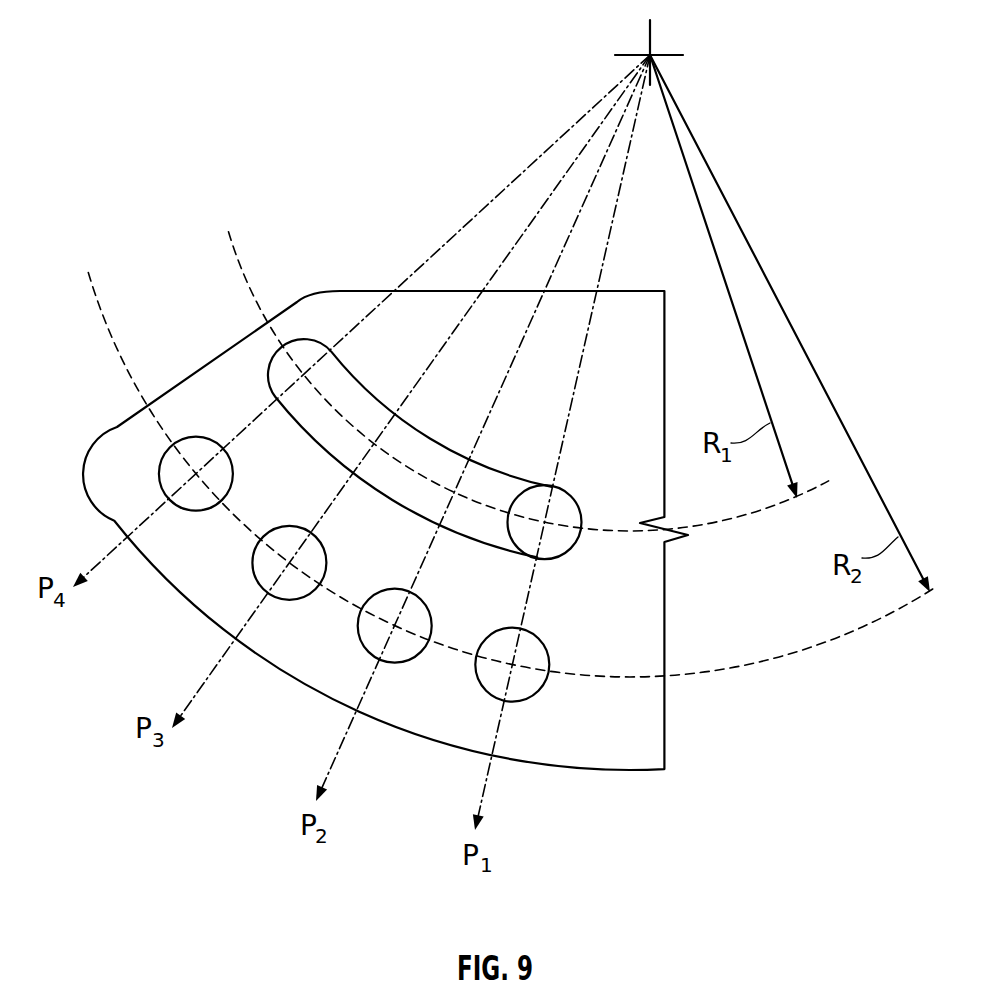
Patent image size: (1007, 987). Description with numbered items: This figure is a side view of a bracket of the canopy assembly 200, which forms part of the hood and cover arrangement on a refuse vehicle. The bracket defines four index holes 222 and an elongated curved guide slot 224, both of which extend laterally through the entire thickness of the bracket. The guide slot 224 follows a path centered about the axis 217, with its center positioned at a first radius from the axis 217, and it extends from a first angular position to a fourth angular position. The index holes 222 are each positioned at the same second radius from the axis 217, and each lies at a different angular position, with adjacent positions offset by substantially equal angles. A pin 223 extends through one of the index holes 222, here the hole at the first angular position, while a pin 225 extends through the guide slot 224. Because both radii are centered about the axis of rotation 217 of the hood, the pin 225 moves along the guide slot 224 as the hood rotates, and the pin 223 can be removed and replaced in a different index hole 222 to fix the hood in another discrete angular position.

The canopy assembly 200 is at (343, 299).
The axis 217 is at (652, 54).
The index holes 222 is at (197, 511).
The pin 223 is at (519, 702).
The guide slot 224 is at (303, 338).
The pin 225 is at (563, 508).